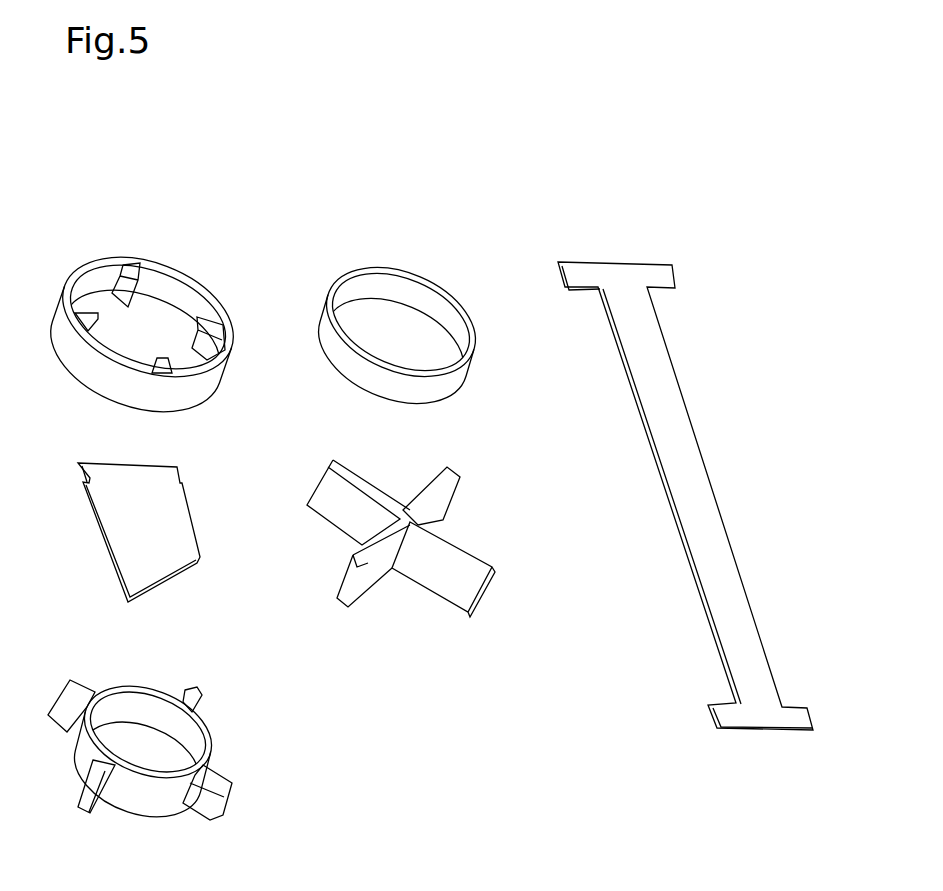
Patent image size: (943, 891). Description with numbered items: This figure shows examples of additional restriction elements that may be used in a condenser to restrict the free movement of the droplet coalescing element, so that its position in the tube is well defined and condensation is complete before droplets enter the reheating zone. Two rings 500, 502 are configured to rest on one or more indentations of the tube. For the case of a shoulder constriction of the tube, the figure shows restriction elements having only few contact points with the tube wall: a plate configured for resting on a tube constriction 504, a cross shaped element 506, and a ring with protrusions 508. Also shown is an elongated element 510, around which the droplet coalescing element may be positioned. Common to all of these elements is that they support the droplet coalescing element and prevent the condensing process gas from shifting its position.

The ring 500 is at (145, 338).
The ring 502 is at (397, 344).
The plate configured for resting on a tube constriction 504 is at (120, 555).
The cross shaped element 506 is at (397, 554).
The ring with protrusions 508 is at (136, 761).
The elongated element 510 is at (685, 508).